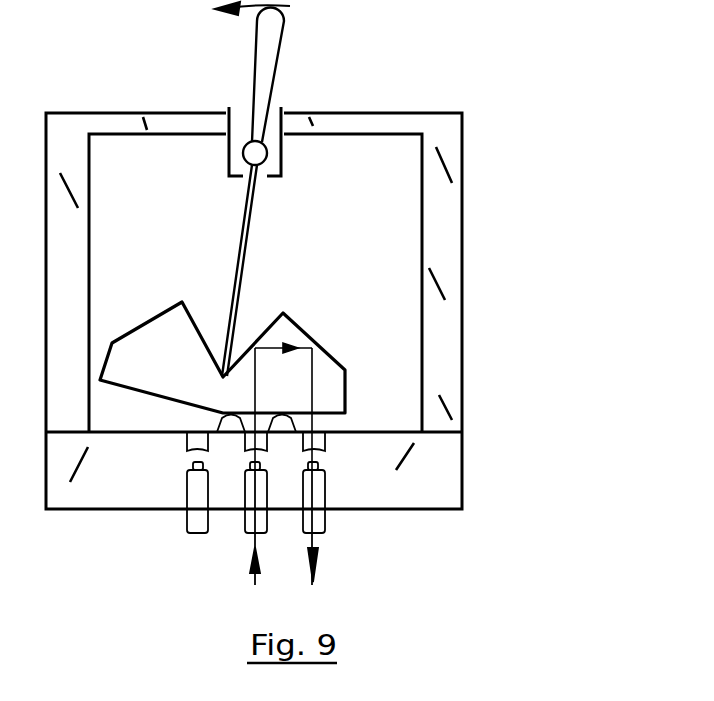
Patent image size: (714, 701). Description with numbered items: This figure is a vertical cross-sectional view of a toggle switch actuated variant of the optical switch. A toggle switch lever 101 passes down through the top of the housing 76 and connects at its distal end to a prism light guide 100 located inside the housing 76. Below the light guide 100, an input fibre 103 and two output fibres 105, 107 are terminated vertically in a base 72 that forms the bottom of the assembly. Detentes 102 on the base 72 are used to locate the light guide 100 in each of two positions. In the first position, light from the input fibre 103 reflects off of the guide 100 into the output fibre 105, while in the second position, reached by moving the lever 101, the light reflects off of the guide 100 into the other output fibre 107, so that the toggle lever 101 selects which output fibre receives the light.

The base 72 is at (445, 463).
The housing frame 76 is at (445, 392).
The prism light guide 100 is at (345, 370).
The toggle switch lever 101 is at (285, 25).
The detentes 102 is at (217, 415).
The input fibre 103 is at (245, 527).
The output fibre 105 is at (323, 520).
The output fibre 107 is at (185, 517).